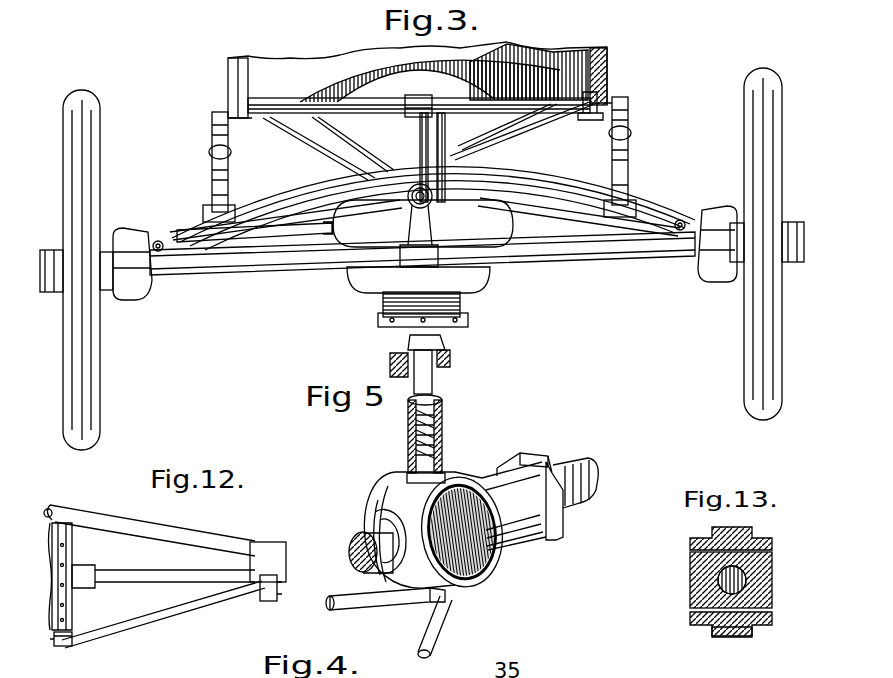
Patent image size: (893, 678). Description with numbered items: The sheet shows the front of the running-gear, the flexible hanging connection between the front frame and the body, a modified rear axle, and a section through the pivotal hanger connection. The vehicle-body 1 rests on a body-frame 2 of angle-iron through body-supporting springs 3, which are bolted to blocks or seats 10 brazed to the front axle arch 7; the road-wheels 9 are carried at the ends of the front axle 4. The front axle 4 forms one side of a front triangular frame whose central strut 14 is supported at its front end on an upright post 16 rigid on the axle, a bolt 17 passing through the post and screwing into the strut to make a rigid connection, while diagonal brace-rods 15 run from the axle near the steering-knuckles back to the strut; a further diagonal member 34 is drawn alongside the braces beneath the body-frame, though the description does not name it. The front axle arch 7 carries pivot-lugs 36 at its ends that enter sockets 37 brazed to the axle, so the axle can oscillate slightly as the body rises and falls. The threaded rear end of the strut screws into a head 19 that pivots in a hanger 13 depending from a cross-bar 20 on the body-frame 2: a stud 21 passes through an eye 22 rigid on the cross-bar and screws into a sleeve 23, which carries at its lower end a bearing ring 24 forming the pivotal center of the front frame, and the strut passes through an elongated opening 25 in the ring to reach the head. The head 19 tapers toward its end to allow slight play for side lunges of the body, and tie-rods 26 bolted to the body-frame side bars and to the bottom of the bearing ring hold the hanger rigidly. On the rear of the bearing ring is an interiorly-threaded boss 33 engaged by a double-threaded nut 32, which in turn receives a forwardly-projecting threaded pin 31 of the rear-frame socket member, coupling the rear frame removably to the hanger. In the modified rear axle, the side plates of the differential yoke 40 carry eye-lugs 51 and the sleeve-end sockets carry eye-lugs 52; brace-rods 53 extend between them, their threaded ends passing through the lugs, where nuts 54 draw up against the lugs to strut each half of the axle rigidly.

In FIG. 3, the vehicle-body 1 is at (273, 66).
In FIG. 3, the body-frame 2 is at (597, 88).
In FIG. 3, the body-supporting springs 3 is at (628, 138).
In FIG. 3, the front axle 4 is at (595, 254).
In FIG. 3, the front axle arch 7 is at (545, 193).
In FIG. 3, the road-wheels 9 is at (89, 153).
In FIG. 3, the blocks or seats 10 is at (210, 210).
In FIG. 3, the hanger 13 is at (432, 167).
In FIG. 5, the hanger 13 is at (408, 444).
In FIG. 13, the hanger 13 is at (708, 532).
In FIG. 5, the central strut 14 is at (350, 551).
In FIG. 13, the central strut 14 is at (714, 630).
In FIG. 3, the diagonal brace-rods 15 is at (302, 232).
In FIG. 3, the upright post 16 is at (428, 230).
In FIG. 3, the bolt 17 is at (410, 205).
In FIG. 5, the head 19 is at (470, 548).
In FIG. 13, the head 19 is at (760, 572).
In FIG. 3, the cross-bar 20 is at (542, 108).
In FIG. 5, the stud 21 is at (436, 380).
In FIG. 3, the eye 22 is at (412, 116).
In FIG. 5, the eye 22 is at (452, 356).
In FIG. 5, the sleeve 23 is at (436, 424).
In FIG. 5, the bearing ring 24 is at (468, 582).
In FIG. 13, the bearing ring 24 is at (762, 616).
In FIG. 5, the elongated opening 25 is at (374, 522).
In FIG. 3, the tie-rods 26 is at (300, 150).
In FIG. 5, the tie-rods 26 is at (396, 628).
In FIG. 5, the threaded pin 31 is at (575, 498).
In FIG. 5, the double-threaded nut 32 is at (552, 528).
In FIG. 5, the threaded boss 33 is at (512, 530).
In FIG. 3, the brace 34 is at (347, 140).
In FIG. 3, the pivot-lugs 36 is at (176, 232).
In FIG. 3, the sockets 37 is at (147, 238).
In FIG. 3, the differential yoke 40 is at (384, 305).
In FIG. 12, the eye-lugs 51 is at (70, 650).
In FIG. 12, the eye-lugs 52 is at (265, 605).
In FIG. 12, the brace-rods 53 is at (168, 618).
In FIG. 12, the nuts 54 is at (278, 592).